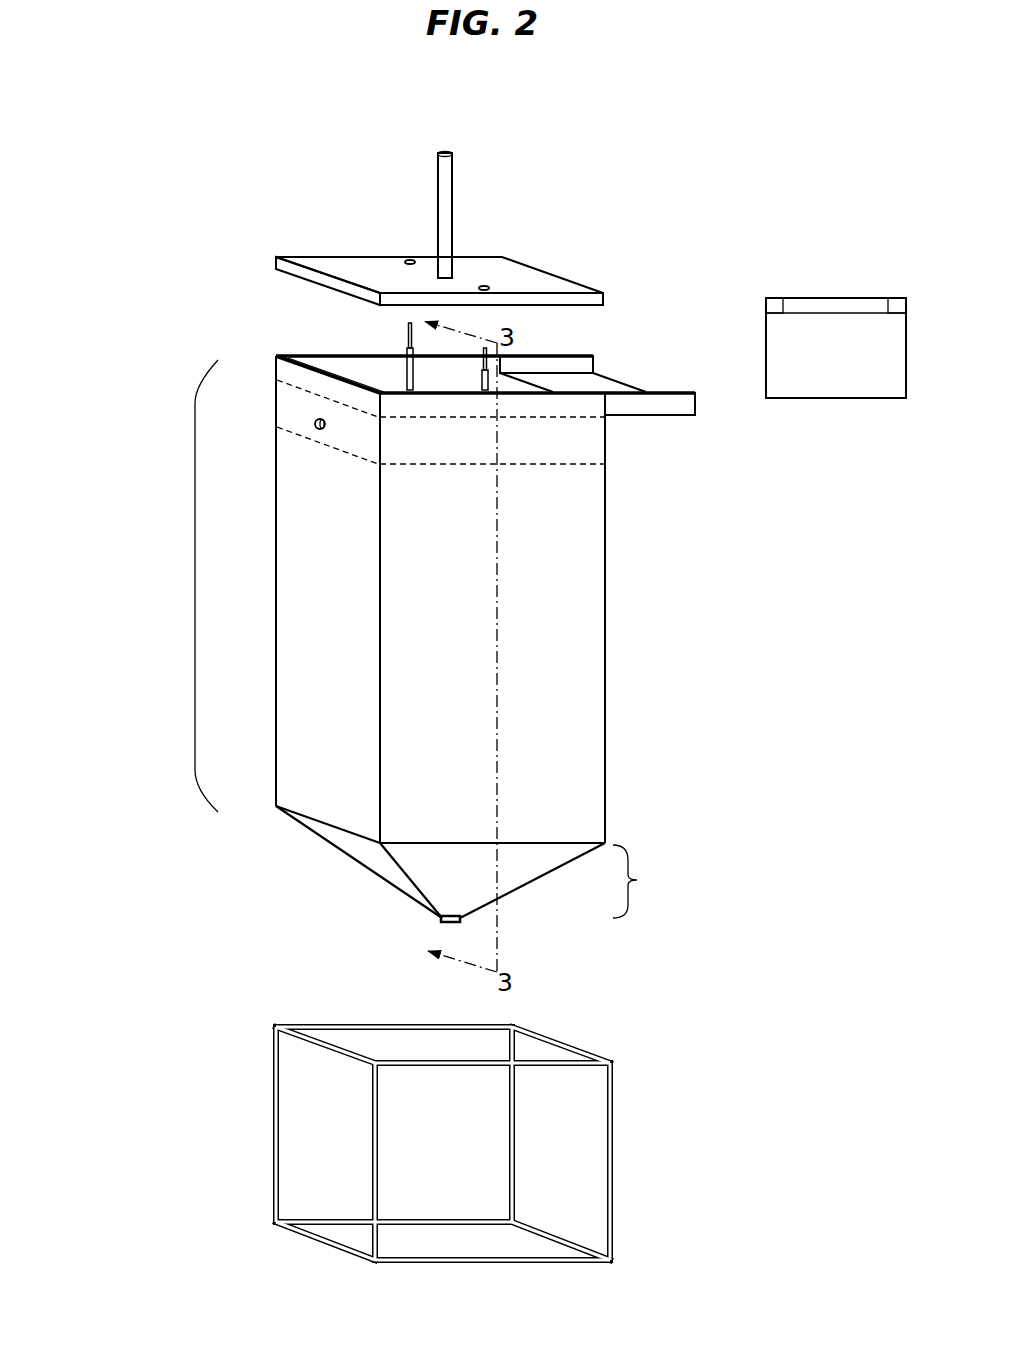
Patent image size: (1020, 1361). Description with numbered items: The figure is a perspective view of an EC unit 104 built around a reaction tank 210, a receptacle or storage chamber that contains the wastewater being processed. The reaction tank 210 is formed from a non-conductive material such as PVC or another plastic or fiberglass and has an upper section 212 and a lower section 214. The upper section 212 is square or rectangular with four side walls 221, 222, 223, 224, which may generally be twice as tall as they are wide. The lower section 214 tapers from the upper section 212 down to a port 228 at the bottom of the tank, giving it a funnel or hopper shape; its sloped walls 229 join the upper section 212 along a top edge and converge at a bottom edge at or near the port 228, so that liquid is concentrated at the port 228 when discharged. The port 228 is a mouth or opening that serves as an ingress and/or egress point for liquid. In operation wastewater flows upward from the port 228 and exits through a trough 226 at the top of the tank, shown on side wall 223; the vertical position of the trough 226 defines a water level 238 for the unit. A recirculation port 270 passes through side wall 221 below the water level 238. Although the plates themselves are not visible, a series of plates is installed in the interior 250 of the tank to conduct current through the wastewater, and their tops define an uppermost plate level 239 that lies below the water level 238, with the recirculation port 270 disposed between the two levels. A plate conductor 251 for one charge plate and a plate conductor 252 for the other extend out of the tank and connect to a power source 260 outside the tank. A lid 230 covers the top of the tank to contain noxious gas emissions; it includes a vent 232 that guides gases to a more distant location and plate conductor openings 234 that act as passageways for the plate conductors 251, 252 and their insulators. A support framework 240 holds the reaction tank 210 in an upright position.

The EC unit 104 is at (104, 373).
The reaction tank 210 is at (605, 607).
The upper section 212 is at (193, 585).
The lower section 214 is at (482, 864).
The side wall 221 is at (323, 644).
The side wall 222 is at (553, 722).
The side wall 223 is at (620, 508).
The side wall 224 is at (264, 494).
The trough 226 is at (696, 412).
The port 228 is at (440, 920).
The sloped walls 229 is at (360, 852).
The lid 230 is at (461, 229).
The vent 232 is at (452, 196).
The plate conductor openings 234 is at (410, 258).
The water level 238 is at (404, 418).
The uppermost plate level 239 is at (410, 465).
The support framework 240 is at (610, 1138).
The interior 250 is at (343, 345).
The plate conductor 251 is at (407, 327).
The plate conductor 252 is at (483, 356).
The power source 260 is at (836, 337).
The recirculation port 270 is at (315, 421).